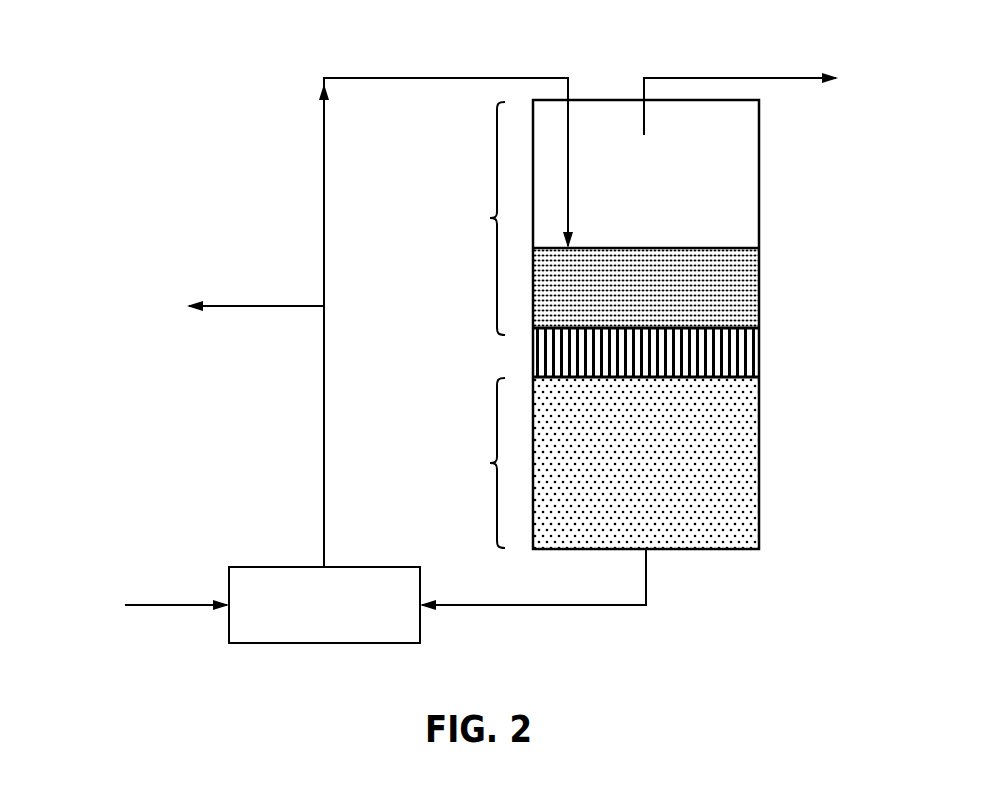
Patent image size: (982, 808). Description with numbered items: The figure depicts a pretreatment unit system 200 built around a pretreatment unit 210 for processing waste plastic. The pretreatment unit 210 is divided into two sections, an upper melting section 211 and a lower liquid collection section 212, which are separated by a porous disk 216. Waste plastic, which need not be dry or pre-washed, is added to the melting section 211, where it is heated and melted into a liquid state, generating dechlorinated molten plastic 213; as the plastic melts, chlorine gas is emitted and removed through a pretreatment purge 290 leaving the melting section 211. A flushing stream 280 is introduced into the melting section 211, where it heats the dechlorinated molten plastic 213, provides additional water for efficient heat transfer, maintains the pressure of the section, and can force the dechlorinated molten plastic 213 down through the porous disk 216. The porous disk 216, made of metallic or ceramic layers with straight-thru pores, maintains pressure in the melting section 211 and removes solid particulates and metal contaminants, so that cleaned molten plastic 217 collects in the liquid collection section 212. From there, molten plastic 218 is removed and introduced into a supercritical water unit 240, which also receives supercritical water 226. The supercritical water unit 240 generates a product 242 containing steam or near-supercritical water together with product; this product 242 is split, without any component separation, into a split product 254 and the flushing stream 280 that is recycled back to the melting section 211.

The pretreatment unit system 200 is at (138, 80).
The pretreatment unit 210 is at (598, 100).
The melting section 211 is at (490, 218).
The liquid collection section 212 is at (490, 463).
The dechlorinated molten plastic 213 is at (759, 291).
The porous disk 216 is at (759, 354).
The cleaned molten plastic 217 is at (759, 477).
The molten plastic 218 is at (549, 607).
The supercritical water 226 is at (170, 603).
The supercritical water unit 240 is at (305, 643).
The product 242 is at (322, 428).
The split product 254 is at (243, 303).
The flushing stream 280 is at (323, 133).
The pretreatment purge 290 is at (775, 78).